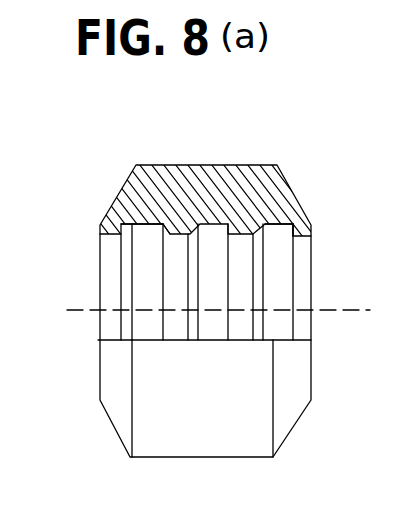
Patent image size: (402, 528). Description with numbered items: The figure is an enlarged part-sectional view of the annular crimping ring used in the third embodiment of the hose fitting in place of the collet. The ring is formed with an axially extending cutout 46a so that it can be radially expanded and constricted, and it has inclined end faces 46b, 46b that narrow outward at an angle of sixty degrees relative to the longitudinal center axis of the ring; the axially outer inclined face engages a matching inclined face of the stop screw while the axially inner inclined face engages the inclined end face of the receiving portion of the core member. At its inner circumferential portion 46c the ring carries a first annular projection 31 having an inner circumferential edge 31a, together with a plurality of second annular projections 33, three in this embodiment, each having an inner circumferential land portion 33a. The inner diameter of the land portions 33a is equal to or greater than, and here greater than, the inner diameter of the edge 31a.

The axially extending cutout 46a is at (280, 340).
The inclined end face 46b is at (125, 187).
The inner circumferential portion 46c is at (92, 243).
The second annular projection 33 is at (163, 229).
The inner circumferential land portion 33a is at (170, 234).
The first annular projection 31 is at (312, 238).
The inner circumferential edge 31a is at (295, 231).